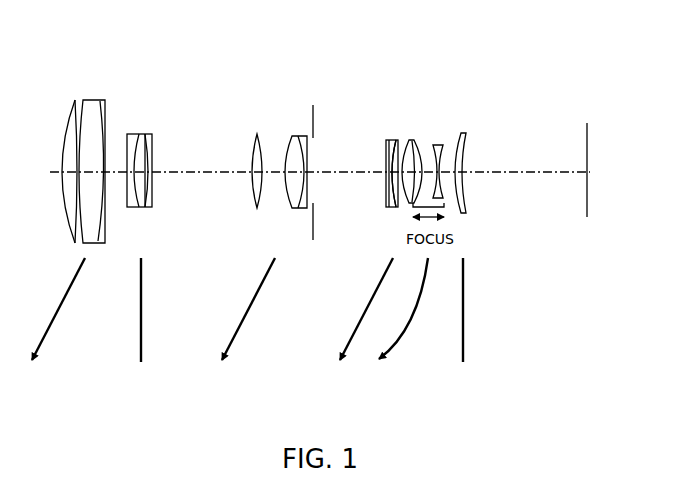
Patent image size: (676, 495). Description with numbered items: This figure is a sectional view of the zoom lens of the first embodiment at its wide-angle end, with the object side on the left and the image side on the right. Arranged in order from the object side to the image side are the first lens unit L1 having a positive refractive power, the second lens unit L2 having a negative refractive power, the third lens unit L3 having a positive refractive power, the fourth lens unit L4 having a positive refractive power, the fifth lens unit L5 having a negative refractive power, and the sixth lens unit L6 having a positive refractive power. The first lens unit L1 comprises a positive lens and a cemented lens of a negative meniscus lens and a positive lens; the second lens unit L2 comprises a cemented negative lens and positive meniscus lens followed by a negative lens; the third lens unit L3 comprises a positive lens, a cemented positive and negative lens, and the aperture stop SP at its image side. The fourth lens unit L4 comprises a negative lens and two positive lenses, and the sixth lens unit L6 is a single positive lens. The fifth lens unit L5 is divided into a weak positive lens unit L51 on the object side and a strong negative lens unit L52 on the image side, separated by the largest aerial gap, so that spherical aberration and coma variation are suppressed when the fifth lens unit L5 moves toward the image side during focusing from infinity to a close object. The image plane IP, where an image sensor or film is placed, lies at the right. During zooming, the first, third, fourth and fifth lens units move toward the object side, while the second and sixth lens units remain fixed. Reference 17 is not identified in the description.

The first lens unit L1 is at (63, 75).
The second lens unit L2 is at (162, 75).
The third lens unit L3 is at (315, 75).
The fourth lens unit L4 is at (405, 75).
The fifth lens unit L5 is at (421, 124).
The 5-1st lens unit L51 is at (382, 134).
The 5-2nd lens unit L52 is at (433, 134).
The sixth lens unit L6 is at (455, 75).
The aperture stop SP is at (316, 106).
The image plane IP is at (580, 129).
The lens surface 17 is at (387, 193).